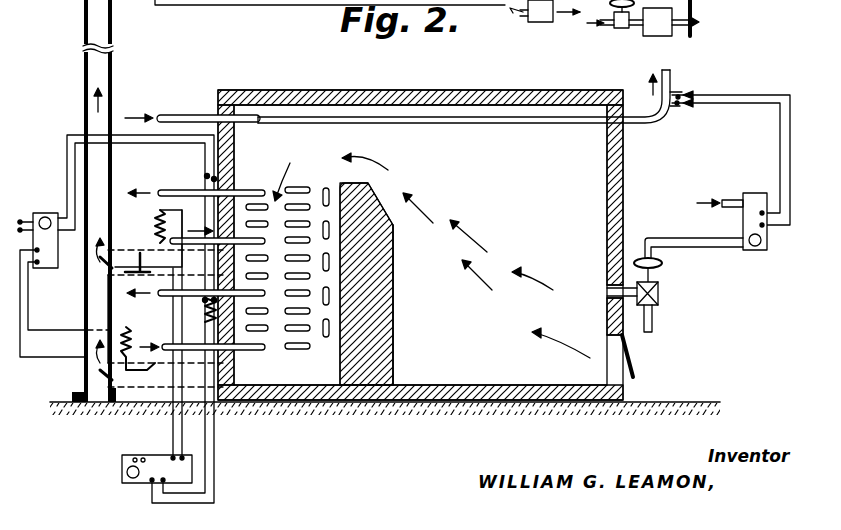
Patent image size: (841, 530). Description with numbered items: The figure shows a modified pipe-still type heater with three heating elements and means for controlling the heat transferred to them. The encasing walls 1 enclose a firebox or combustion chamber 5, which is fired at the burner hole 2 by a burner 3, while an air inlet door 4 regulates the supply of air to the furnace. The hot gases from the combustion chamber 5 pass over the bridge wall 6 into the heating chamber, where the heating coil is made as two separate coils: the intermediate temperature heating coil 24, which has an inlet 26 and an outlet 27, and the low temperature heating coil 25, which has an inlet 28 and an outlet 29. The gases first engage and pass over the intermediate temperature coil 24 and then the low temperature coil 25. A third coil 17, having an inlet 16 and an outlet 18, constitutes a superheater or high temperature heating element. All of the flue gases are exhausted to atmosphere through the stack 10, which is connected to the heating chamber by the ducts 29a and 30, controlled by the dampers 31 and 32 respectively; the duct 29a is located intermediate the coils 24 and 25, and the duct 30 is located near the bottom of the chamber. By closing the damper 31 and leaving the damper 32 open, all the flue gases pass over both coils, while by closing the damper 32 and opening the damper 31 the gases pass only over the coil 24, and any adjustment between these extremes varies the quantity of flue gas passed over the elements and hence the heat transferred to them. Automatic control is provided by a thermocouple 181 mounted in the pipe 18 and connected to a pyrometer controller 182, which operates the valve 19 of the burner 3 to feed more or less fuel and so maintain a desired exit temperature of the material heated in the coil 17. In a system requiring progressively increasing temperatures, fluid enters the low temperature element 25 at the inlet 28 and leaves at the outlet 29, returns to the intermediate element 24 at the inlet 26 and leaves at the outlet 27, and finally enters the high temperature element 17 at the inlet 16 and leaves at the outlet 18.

The encasing walls 1 is at (420, 231).
The burner hole 2 is at (603, 285).
The burner 3 is at (660, 284).
The air inlet door 4 is at (630, 358).
The combustion chamber 5 is at (466, 255).
The bridge wall 6 is at (378, 313).
The stack 10 is at (84, 176).
The inlet 16 is at (178, 116).
The heating coil 17 is at (545, 120).
The outlet 18 is at (719, 142).
The valve 19 is at (658, 297).
The intermediate temperature heating coil 24 is at (302, 188).
The low temperature heating coil 25 is at (283, 300).
The inlet 26 is at (217, 227).
The outlet 27 is at (196, 179).
The inlet 28 is at (177, 340).
The outlet 29 is at (208, 293).
The flue gas outlet duct 29a is at (124, 262).
The flue gas outlet duct 30 is at (158, 377).
The damper 31 is at (110, 285).
The damper 32 is at (145, 373).
The thermocouple 181 is at (669, 108).
The pyrometer controller 182 is at (752, 192).